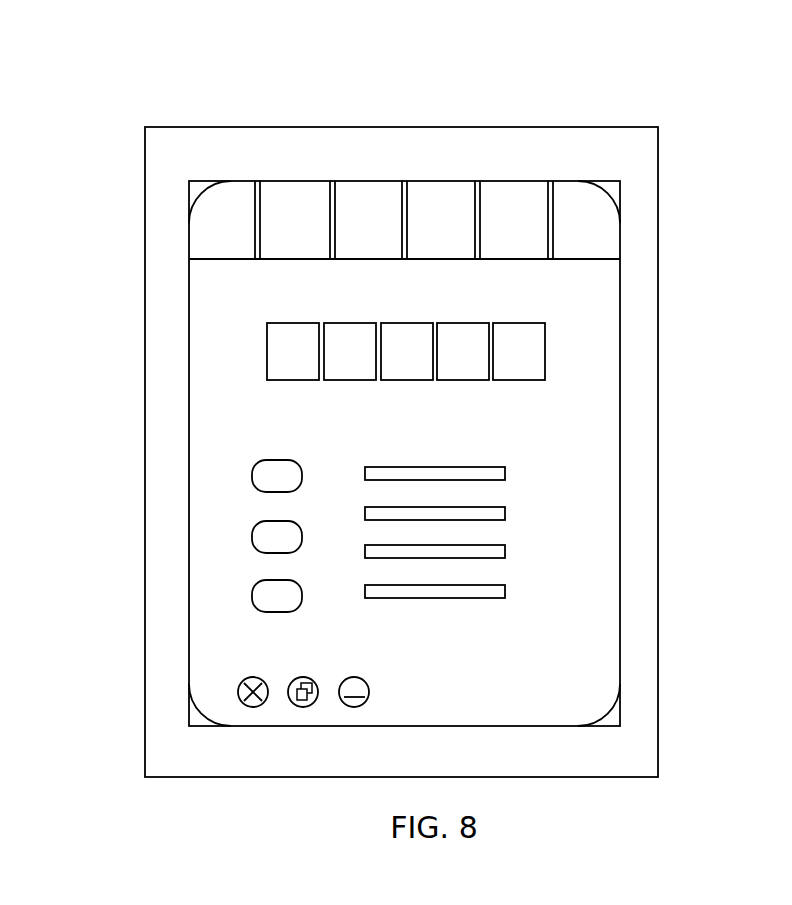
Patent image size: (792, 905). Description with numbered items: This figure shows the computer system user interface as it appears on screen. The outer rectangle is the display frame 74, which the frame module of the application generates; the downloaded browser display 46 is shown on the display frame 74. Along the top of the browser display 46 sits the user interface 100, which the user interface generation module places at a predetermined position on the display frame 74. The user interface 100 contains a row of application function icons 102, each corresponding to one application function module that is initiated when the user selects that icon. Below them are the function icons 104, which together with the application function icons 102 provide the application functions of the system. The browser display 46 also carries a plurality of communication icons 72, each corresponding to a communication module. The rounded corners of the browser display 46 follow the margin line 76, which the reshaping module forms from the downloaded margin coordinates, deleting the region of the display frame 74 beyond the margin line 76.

The display frame 74 is at (615, 127).
The browser display 46 is at (577, 547).
The user interface 100 is at (620, 240).
The application function icons 102 is at (300, 208).
The function icons 104 is at (393, 367).
The communication icons 72 is at (262, 473).
The margin line 76 is at (608, 710).